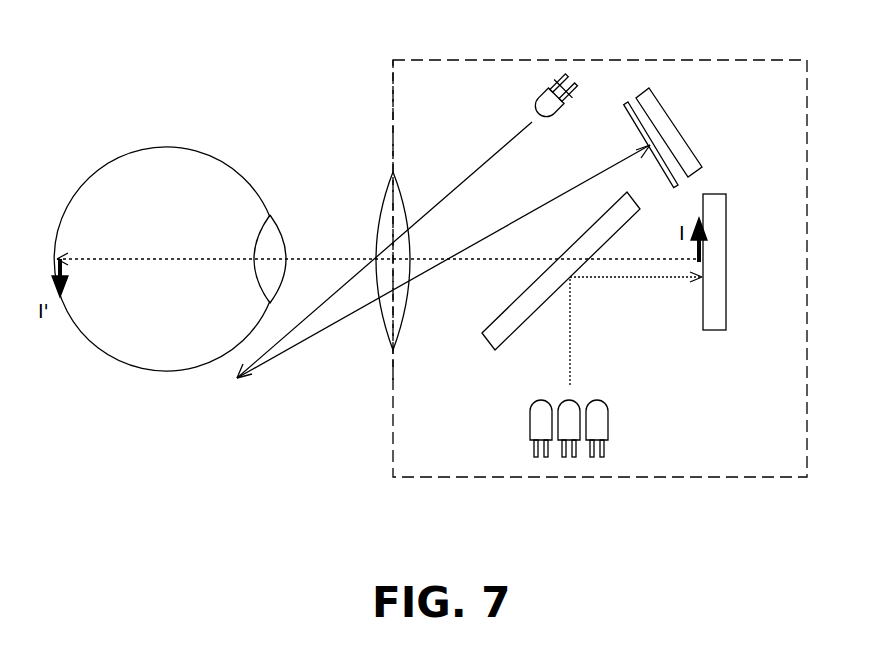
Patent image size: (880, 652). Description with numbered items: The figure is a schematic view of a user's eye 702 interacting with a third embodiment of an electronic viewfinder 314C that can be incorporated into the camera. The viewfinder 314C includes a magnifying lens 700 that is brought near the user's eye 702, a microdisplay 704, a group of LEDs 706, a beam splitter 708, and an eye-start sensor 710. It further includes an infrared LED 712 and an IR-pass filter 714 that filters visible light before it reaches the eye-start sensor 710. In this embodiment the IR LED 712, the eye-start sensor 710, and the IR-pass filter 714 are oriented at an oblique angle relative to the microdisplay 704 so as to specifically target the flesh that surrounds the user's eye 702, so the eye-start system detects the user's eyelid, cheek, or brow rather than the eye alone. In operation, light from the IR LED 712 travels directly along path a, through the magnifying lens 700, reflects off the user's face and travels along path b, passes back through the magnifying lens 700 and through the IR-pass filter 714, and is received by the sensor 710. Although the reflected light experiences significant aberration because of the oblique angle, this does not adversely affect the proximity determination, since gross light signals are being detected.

The electronic viewfinder 314C is at (740, 60).
The magnifying lens 700 is at (378, 215).
The user's eye 702 is at (225, 136).
The microdisplay 704 is at (726, 212).
The group of LEDs 706 is at (627, 428).
The beam splitter 708 is at (485, 335).
The eye-start sensor 710 is at (660, 100).
The infrared LED 712 is at (540, 104).
The IR-pass filter 714 is at (640, 128).
The path a is at (462, 183).
The path b is at (488, 233).